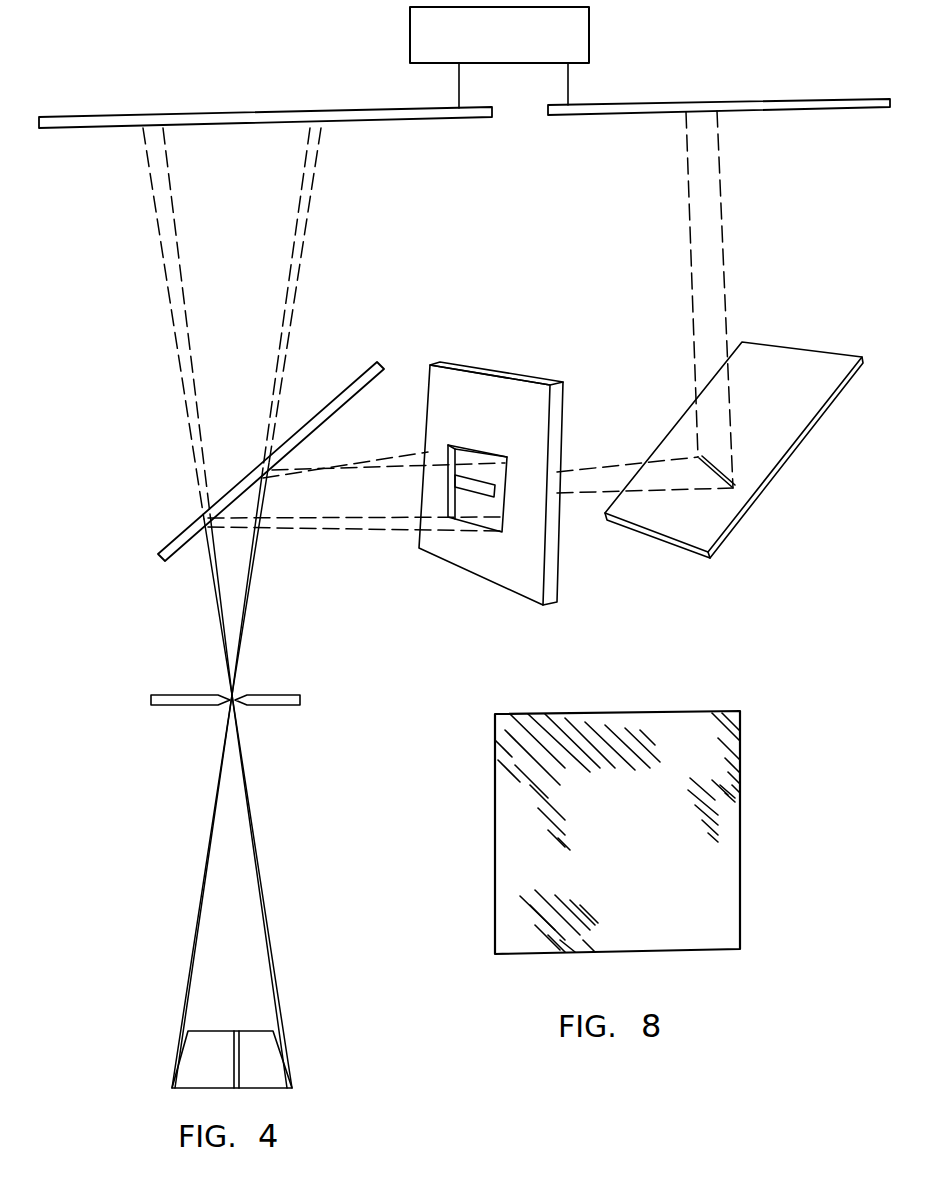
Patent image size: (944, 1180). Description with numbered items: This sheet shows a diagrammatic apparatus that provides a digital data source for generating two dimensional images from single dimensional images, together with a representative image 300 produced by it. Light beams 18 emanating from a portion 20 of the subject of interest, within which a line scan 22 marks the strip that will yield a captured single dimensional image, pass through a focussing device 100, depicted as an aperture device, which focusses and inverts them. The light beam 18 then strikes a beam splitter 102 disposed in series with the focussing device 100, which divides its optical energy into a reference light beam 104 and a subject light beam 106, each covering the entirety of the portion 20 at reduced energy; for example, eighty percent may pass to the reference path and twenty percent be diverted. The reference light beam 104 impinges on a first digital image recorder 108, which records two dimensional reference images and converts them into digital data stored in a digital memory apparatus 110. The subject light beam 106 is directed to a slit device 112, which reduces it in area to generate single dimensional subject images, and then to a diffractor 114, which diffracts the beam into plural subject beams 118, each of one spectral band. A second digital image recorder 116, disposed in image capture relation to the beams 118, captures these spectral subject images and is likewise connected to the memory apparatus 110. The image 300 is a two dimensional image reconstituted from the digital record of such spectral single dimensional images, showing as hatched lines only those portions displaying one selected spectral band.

In FIG. 4, the digital memory apparatus 110 is at (410, 42).
In FIG. 4, the first digital image recorder 108 is at (221, 113).
In FIG. 4, the second digital image recorder 116 is at (788, 101).
In FIG. 4, the reference light beam 104 is at (303, 256).
In FIG. 4, the plural subject beams 118 is at (726, 268).
In FIG. 4, the incoming light beams 18 is at (262, 600).
In FIG. 4, the beam splitter 102 is at (174, 543).
In FIG. 4, the subject light beam 106 is at (615, 415).
In FIG. 4, the slit device 112 is at (515, 372).
In FIG. 4, the diffractor 114 is at (734, 519).
In FIG. 4, the focussing device 100 is at (286, 713).
In FIG. 4, the portion of the subject of interest 20 is at (212, 1075).
In FIG. 4, the line scan 22 is at (240, 1050).
In FIG. 8, the image 300 is at (741, 886).